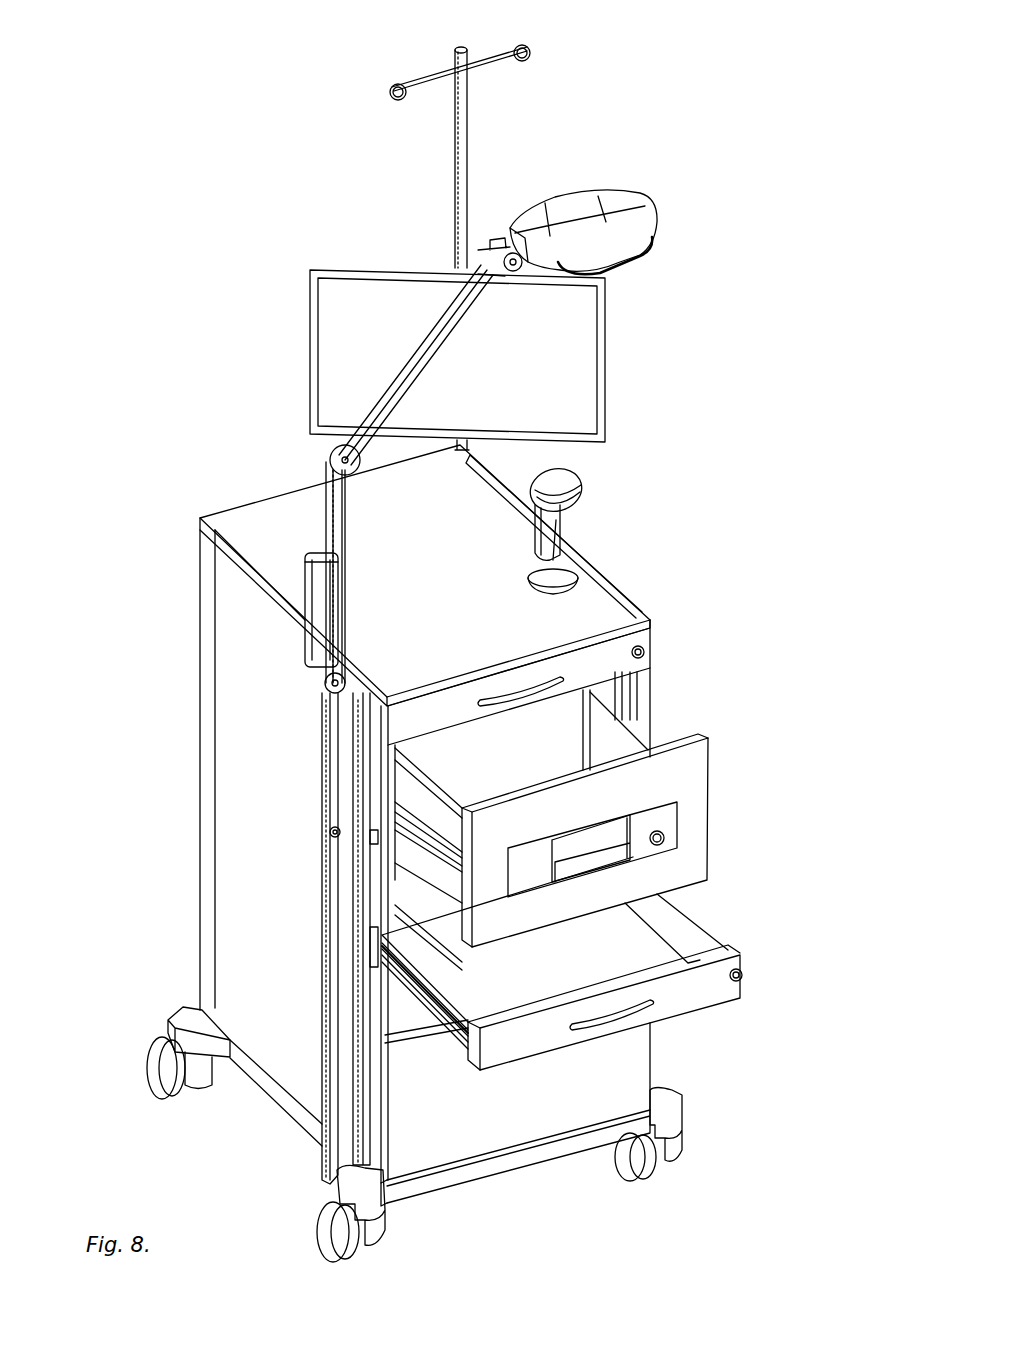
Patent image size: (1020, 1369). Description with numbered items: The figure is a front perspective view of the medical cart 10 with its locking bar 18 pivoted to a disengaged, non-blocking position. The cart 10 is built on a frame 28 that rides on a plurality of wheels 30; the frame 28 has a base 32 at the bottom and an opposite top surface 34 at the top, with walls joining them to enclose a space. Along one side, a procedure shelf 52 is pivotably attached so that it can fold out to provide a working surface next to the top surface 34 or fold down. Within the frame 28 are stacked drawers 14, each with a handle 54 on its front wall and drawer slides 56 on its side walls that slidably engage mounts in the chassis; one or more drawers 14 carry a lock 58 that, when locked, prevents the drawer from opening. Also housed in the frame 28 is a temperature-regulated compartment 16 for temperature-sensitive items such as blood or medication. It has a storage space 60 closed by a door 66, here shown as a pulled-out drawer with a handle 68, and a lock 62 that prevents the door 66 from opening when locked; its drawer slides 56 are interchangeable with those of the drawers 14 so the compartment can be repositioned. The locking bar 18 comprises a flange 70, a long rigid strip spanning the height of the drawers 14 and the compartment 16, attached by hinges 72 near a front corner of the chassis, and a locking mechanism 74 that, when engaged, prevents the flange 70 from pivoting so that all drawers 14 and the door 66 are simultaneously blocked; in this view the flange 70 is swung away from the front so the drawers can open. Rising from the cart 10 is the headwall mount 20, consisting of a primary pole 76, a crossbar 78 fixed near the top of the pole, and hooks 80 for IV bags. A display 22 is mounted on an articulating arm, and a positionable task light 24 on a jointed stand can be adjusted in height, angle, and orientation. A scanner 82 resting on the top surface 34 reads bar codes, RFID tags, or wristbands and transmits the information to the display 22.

The medical cart 10 is at (200, 376).
The drawers 14 is at (580, 675).
The temperature-regulated compartment 16 is at (695, 777).
The locking bar 18 is at (340, 922).
The headwall mount 20 is at (455, 219).
The display 22 is at (582, 360).
The positionable task light 24 is at (636, 211).
The frame 28 is at (560, 1150).
The wheels 30 is at (160, 1072).
The base 32 is at (460, 1178).
The top surface 34 is at (283, 505).
The procedure shelf 52 is at (625, 583).
The handle 54 is at (515, 700).
The drawer slides 56 is at (425, 830).
The lock 58 is at (655, 650).
The storage space 60 is at (608, 755).
The lock 62 is at (670, 838).
The door 66 is at (588, 720).
The handle 68 is at (605, 845).
The flange 70 is at (337, 882).
The hinges 72 is at (360, 795).
The locking mechanism 74 is at (325, 832).
The primary pole 76 is at (455, 125).
The crossbar 78 is at (492, 53).
The hooks 80 is at (530, 60).
The scanner 82 is at (572, 500).